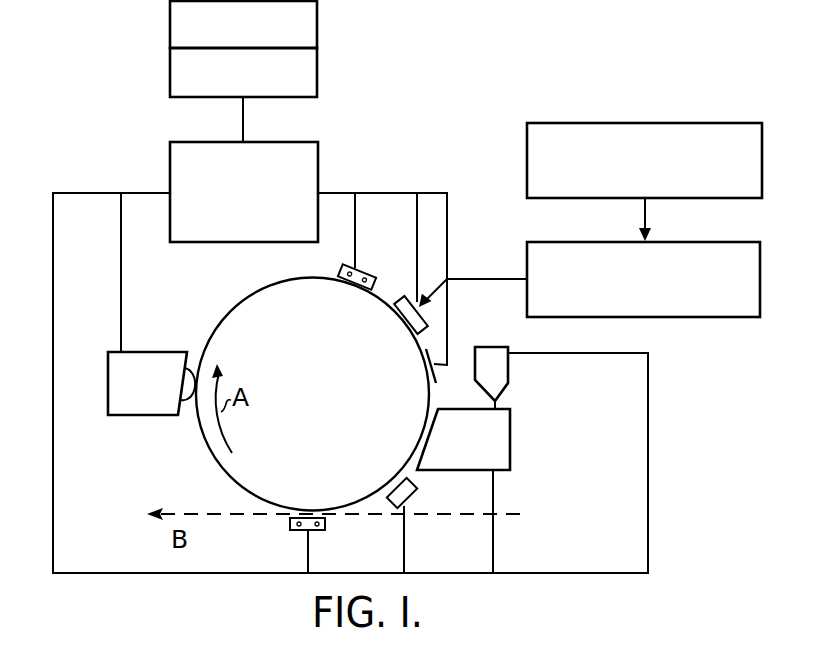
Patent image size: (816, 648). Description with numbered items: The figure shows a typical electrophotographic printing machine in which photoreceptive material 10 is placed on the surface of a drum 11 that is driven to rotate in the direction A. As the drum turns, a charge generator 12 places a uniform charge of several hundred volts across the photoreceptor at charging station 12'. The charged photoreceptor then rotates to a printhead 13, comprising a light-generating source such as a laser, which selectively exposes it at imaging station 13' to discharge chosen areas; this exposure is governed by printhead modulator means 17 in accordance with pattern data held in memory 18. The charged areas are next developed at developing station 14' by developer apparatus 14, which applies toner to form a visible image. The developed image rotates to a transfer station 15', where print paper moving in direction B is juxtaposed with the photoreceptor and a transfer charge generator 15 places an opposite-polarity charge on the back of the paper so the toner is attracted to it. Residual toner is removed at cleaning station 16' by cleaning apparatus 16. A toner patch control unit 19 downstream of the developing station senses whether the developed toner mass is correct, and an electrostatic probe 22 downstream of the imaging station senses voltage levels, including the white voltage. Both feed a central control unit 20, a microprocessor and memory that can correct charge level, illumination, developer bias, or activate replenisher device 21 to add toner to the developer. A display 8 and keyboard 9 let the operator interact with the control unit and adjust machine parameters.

The display 8 is at (317, 34).
The keyboard 9 is at (317, 73).
The photoreceptive material 10 is at (243, 305).
The drum 11 is at (312, 441).
The charge generator 12 is at (374, 254).
The charging station 12' is at (334, 318).
The printhead 13 is at (405, 293).
The imaging station 13' is at (385, 347).
The developer apparatus 14 is at (494, 444).
The developing station 14' is at (402, 427).
The transfer charge generator 15 is at (329, 539).
The transfer station 15' is at (329, 490).
The cleaning apparatus 16 is at (151, 357).
The cleaning station 16' is at (241, 345).
The printhead modulator means 17 is at (527, 259).
The memory 18 is at (527, 161).
The toner patch control unit 19 is at (415, 497).
The central control unit 20 is at (318, 178).
The replenisher device 21 is at (508, 371).
The electrostatic probe 22 is at (429, 372).